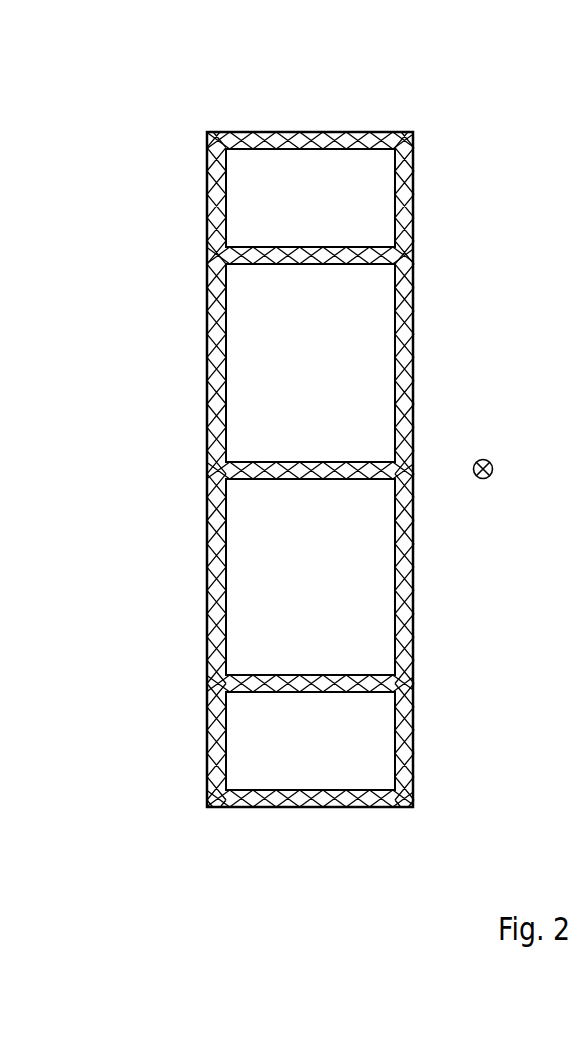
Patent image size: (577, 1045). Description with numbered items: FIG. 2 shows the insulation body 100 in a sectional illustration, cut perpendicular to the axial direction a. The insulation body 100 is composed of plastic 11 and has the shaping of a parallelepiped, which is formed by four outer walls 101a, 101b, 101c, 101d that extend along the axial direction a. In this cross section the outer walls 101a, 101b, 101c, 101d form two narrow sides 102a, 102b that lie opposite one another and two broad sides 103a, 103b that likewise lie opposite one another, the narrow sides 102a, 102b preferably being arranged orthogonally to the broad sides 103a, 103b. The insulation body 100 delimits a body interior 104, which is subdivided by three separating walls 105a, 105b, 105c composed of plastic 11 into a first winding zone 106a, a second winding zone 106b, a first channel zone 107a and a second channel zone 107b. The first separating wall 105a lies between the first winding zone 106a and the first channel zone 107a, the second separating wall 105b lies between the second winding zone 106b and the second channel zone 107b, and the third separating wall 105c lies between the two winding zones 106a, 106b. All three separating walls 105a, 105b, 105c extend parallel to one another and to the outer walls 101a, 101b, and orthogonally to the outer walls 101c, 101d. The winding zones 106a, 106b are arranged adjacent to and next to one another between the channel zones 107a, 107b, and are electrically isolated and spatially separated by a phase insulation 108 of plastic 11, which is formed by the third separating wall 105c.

The insulation body 100 is at (506, 168).
The plastic 11 is at (410, 363).
The outer wall 101a is at (310, 841).
The outer wall 101b is at (310, 101).
The outer wall 101c is at (135, 469).
The outer wall 101d is at (486, 469).
The narrow side 102a is at (310, 802).
The narrow side 102b is at (313, 143).
The broad side 103a is at (212, 578).
The broad side 103b is at (408, 578).
The body interior 104 is at (244, 396).
The first separating wall 105a is at (305, 682).
The second separating wall 105b is at (307, 257).
The third separating wall 105c is at (310, 436).
The first winding zone 106a is at (335, 582).
The second winding zone 106b is at (328, 372).
The first channel zone 107a is at (335, 750).
The second channel zone 107b is at (328, 213).
The phase insulation 108 is at (295, 470).
The axial direction a is at (493, 469).